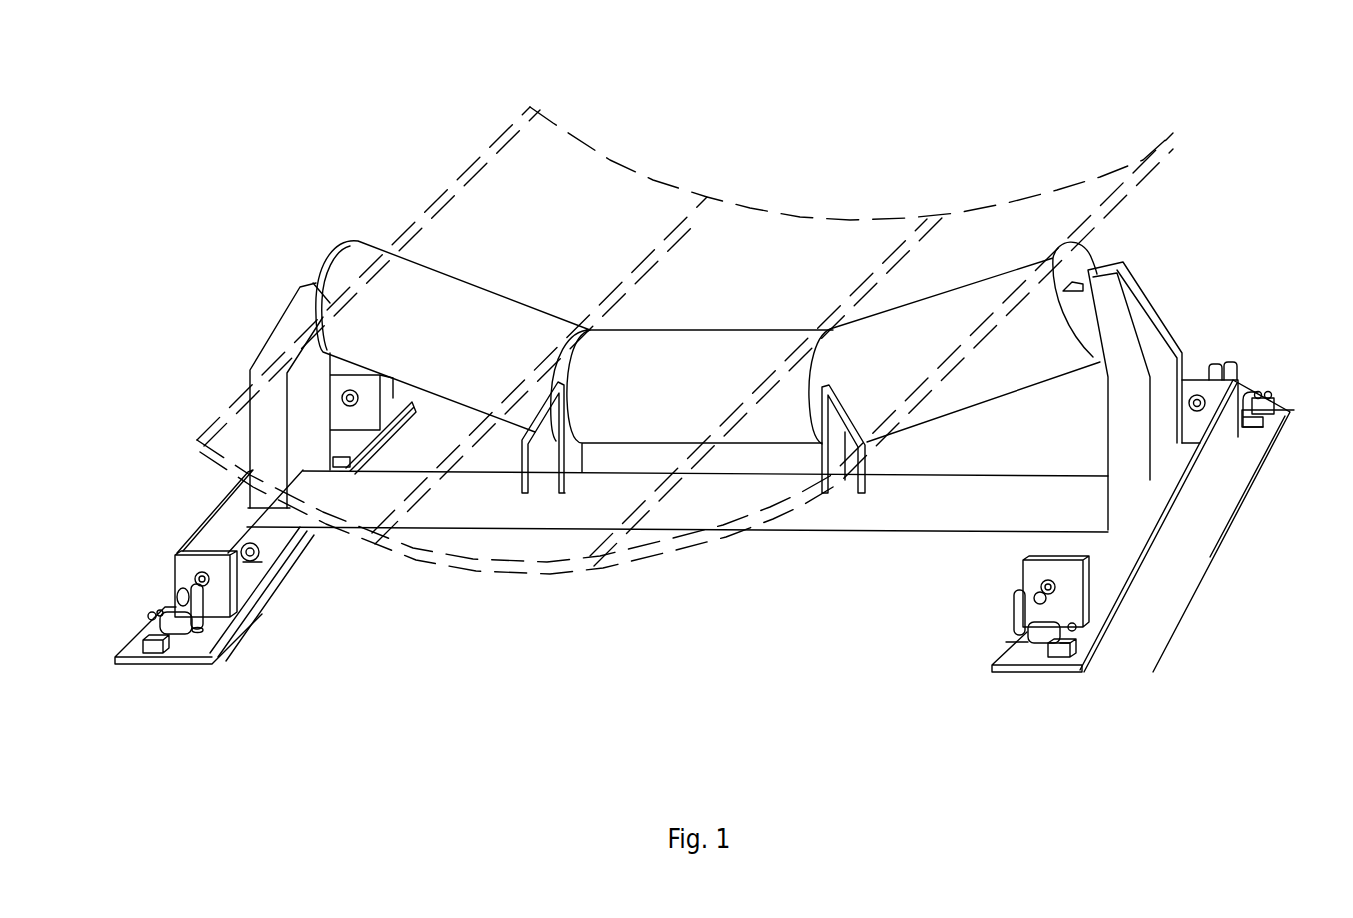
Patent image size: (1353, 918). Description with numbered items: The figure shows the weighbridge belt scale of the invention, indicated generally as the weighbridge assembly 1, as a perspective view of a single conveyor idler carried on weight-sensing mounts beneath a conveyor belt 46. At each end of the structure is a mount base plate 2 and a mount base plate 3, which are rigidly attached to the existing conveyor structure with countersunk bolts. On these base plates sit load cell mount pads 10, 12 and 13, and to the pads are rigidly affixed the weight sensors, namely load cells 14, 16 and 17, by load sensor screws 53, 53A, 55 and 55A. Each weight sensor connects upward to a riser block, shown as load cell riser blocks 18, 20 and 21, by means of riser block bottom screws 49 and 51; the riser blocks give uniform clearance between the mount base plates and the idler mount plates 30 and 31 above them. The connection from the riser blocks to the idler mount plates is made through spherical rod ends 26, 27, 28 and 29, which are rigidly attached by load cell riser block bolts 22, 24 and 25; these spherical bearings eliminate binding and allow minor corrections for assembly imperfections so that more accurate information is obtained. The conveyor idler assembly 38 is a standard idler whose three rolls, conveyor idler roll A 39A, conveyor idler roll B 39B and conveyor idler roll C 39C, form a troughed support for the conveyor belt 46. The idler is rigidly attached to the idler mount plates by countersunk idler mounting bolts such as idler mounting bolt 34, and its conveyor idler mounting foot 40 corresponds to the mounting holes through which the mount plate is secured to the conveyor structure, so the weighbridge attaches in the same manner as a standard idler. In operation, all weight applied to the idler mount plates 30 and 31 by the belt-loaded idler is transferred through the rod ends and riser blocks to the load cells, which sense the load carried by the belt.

The weighbridge assembly 1 is at (703, 362).
The mount base plate 2 is at (190, 648).
The mount base plate 3 is at (1023, 657).
The load cell mount pad 10 is at (150, 640).
The load cell mount pad 12 is at (1060, 653).
The load cell mount pad 13 is at (1273, 413).
The load cell 14 is at (175, 625).
The load cell 16 is at (1062, 640).
The load cell 17 is at (1242, 390).
The load cell riser block 18 is at (202, 607).
The load cell riser block 20 is at (1018, 612).
The load cell riser block 21 is at (1215, 367).
The load cell riser block bolt 22 is at (176, 594).
The load cell riser block bolt 24 is at (1043, 588).
The load cell riser block bolt 25 is at (1238, 370).
The spherical rod end 26 is at (185, 590).
The spherical rod end 27 is at (343, 396).
The spherical rod end 28 is at (1037, 602).
The spherical rod end 29 is at (1226, 367).
The idler mount plate 30 is at (227, 523).
The idler mount plate 31 is at (1155, 507).
The idler mounting bolt 34 is at (267, 572).
The conveyor idler assembly 38 is at (298, 317).
The conveyor idler roll A 39A is at (420, 313).
The conveyor idler roll B 39B is at (712, 382).
The conveyor idler roll C 39C is at (908, 352).
The conveyor idler mounting foot 40 is at (297, 523).
The conveyor belt 46 is at (592, 138).
The riser block bottom screw 49 is at (197, 633).
The riser block bottom screw 51 is at (1010, 642).
The load sensor screw 53 is at (150, 616).
The load sensor screw 53A is at (160, 613).
The load sensor screw 55 is at (1067, 633).
The load sensor screw 55A is at (1077, 627).